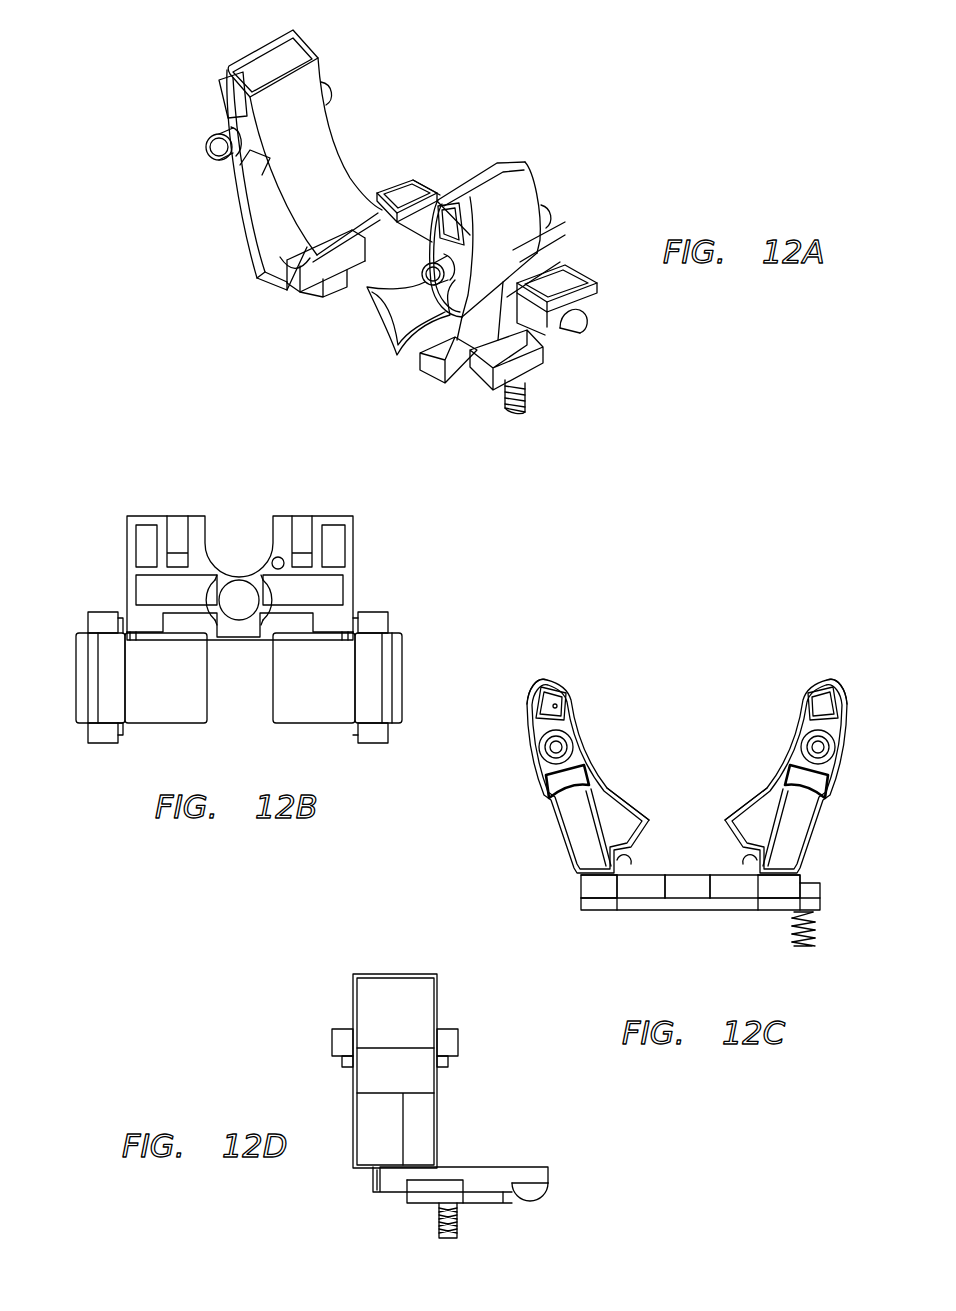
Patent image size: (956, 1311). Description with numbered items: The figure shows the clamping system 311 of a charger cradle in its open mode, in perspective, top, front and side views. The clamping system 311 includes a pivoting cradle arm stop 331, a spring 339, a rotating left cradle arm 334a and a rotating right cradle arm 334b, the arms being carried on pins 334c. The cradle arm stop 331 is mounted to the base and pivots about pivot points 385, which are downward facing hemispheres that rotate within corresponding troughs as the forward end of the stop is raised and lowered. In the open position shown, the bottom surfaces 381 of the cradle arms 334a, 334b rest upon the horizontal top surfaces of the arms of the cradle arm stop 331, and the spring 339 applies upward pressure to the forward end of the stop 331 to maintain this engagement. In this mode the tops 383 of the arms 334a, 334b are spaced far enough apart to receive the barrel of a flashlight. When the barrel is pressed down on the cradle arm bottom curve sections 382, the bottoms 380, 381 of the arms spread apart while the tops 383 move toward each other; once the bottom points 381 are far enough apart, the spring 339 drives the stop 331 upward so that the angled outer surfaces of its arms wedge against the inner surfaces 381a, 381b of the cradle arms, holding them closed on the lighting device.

In FIG. 12A, the clamping system 311 is at (467, 76).
In FIG. 12B, the clamping system 311 is at (112, 526).
In FIG. 12C, the clamping system 311 is at (511, 662).
In FIG. 12D, the clamping system 311 is at (327, 1000).
In FIG. 12A, the cradle arm stop 331 is at (580, 270).
In FIG. 12C, the cradle arm stop 331 is at (688, 887).
In FIG. 12D, the cradle arm stop 331 is at (495, 1175).
In FIG. 12A, the left cradle arm 334a is at (300, 150).
In FIG. 12C, the left cradle arm 334a is at (547, 712).
In FIG. 12D, the left cradle arm 334a is at (395, 1071).
In FIG. 12A, the right cradle arm 334b is at (497, 217).
In FIG. 12C, the right cradle arm 334b is at (818, 707).
In FIG. 12A, the pivot pins 334c is at (215, 130).
In FIG. 12D, the pivot pins 334c is at (448, 1040).
In FIG. 12A, the spring 339 is at (528, 388).
In FIG. 12C, the spring 339 is at (815, 940).
In FIG. 12D, the spring 339 is at (457, 1220).
In FIG. 12C, the bottoms of cradle arms 380 is at (590, 887).
In FIG. 12C, the bottom surfaces of cradle arms 381 is at (743, 893).
In FIG. 12C, the inner surface 381a is at (618, 833).
In FIG. 12C, the inner surface 381b is at (760, 833).
In FIG. 12C, the cradle arm bottom curve sections 382 is at (758, 793).
In FIG. 12C, the tops of cradle arms 383 is at (563, 683).
In FIG. 12A, the pivot points 385 is at (583, 317).
In FIG. 12D, the pivot points 385 is at (535, 1185).